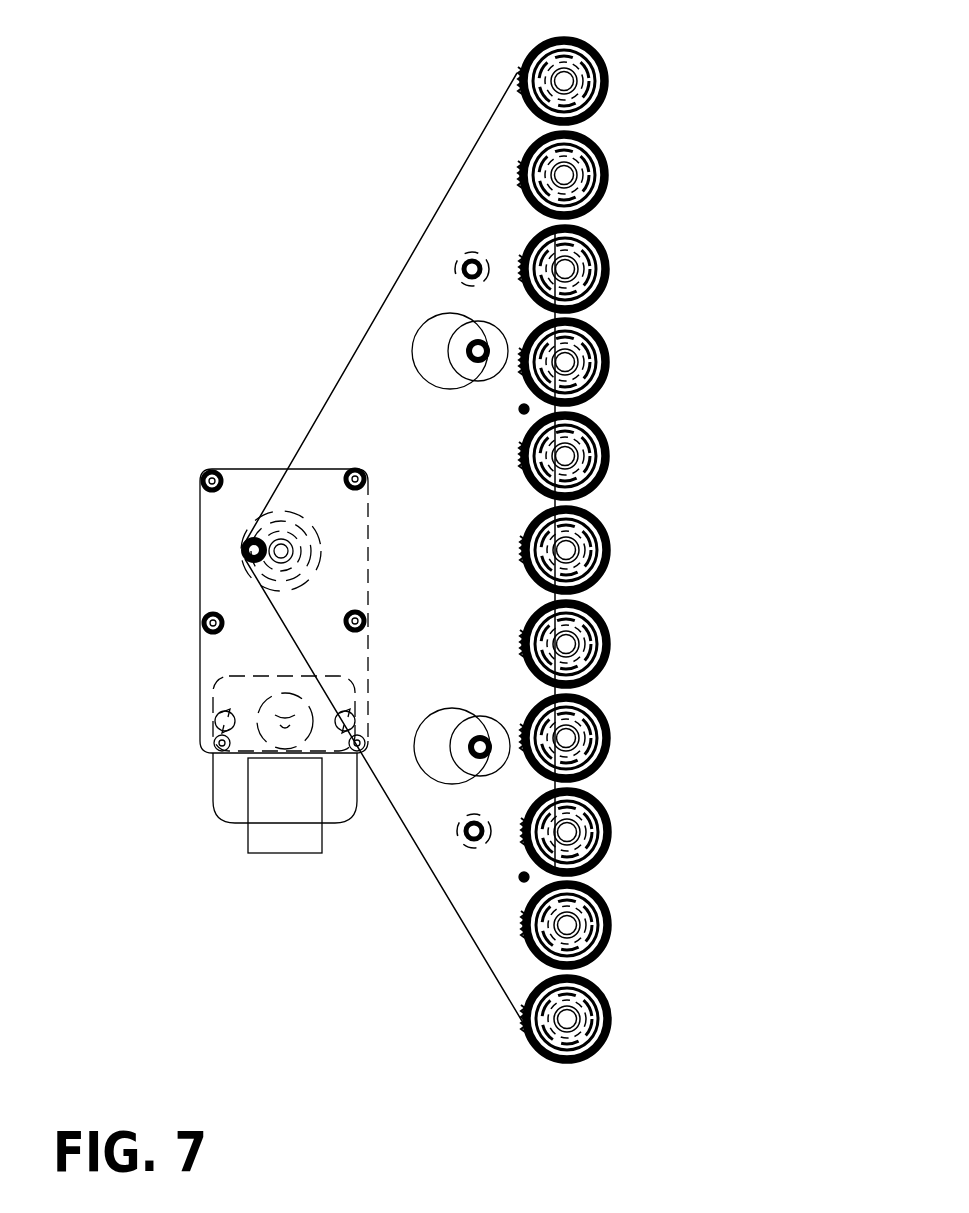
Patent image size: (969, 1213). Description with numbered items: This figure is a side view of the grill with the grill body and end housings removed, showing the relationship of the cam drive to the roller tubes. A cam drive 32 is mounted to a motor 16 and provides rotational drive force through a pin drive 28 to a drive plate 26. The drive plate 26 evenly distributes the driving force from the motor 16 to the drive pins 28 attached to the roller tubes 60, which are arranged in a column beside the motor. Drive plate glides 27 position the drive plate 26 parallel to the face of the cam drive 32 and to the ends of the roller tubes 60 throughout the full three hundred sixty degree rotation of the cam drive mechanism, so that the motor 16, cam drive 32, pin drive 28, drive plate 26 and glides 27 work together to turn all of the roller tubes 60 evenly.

The motor 16 is at (275, 805).
The drive plate 26 is at (381, 303).
The drive plate glides 27 is at (480, 718).
The pin drive 28 is at (243, 556).
The cam drive 32 is at (286, 588).
The roller tubes 60 is at (606, 998).